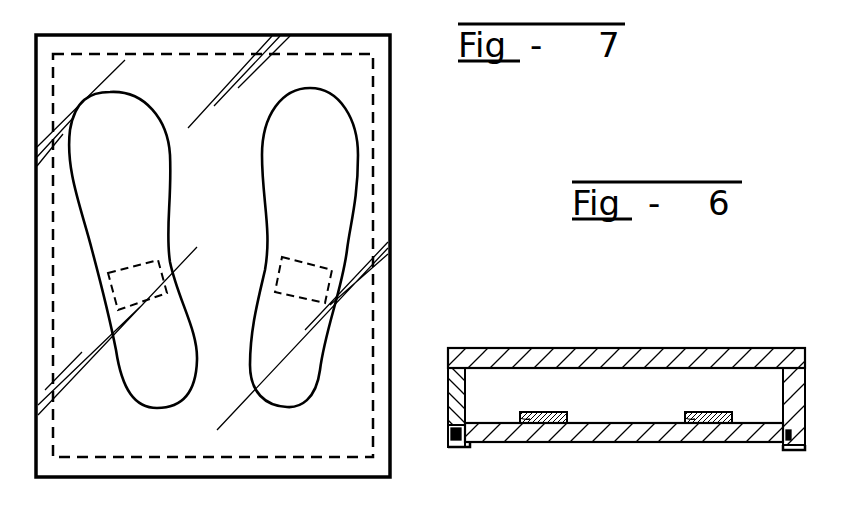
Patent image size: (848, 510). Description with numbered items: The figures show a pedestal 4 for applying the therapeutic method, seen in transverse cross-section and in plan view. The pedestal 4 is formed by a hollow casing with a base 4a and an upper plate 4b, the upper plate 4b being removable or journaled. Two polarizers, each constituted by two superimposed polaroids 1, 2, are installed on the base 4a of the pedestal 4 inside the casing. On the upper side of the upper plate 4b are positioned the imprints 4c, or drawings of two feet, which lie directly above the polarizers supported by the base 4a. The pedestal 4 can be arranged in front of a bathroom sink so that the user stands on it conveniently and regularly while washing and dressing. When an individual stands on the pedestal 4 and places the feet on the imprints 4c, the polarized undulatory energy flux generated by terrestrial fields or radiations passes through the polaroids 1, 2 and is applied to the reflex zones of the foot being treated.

In FIG. 6, the polaroid 1 is at (549, 411).
In FIG. 6, the polaroid 2 is at (521, 419).
In FIG. 7, the pedestal 4 is at (396, 203).
In FIG. 6, the pedestal 4 is at (595, 339).
In FIG. 6, the base 4a is at (755, 420).
In FIG. 7, the upper plate 4b is at (363, 300).
In FIG. 6, the upper plate 4b is at (482, 358).
In FIG. 7, the imprints 4c is at (152, 203).